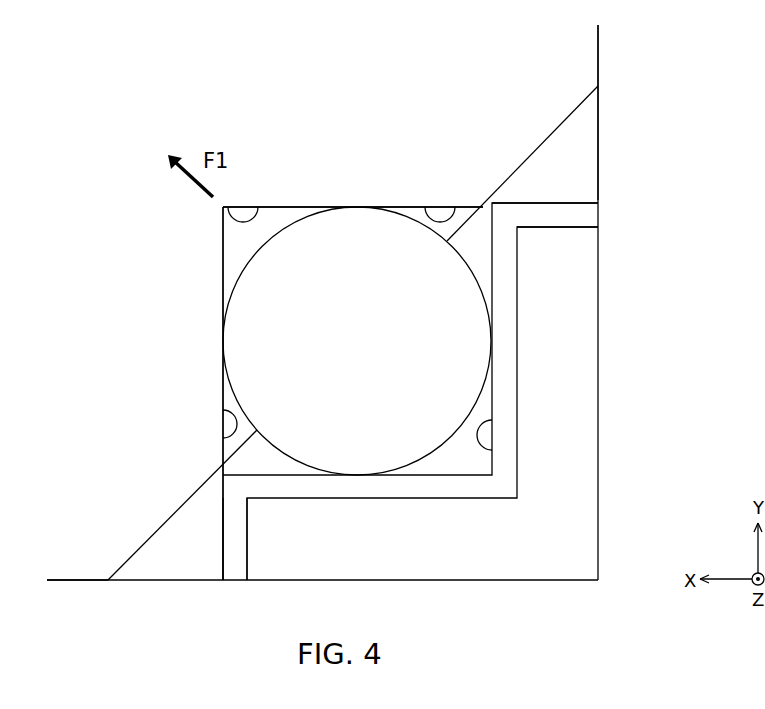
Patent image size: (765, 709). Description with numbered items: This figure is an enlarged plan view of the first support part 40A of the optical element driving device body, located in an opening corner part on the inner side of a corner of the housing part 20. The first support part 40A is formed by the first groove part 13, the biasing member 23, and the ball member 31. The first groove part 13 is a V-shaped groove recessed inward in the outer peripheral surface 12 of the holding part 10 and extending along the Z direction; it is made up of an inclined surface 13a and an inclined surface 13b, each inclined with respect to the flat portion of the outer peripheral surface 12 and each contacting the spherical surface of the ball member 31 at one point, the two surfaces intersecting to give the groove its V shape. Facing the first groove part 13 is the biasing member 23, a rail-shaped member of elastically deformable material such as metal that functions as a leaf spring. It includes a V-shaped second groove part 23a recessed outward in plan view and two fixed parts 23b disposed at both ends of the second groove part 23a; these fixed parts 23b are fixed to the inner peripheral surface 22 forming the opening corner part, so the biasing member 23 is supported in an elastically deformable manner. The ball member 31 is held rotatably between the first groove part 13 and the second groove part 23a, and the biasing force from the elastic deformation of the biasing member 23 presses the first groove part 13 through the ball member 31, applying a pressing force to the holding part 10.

The holding part 10 is at (92, 568).
The outer peripheral surface 12 is at (597, 55).
The first groove part 13 is at (256, 214).
The inclined surface 13a is at (426, 210).
The inclined surface 13b is at (225, 412).
The housing part 20 is at (92, 615).
The inner peripheral surface 22 is at (599, 70).
The biasing member 23 is at (503, 487).
The second groove part 23a is at (490, 458).
The fixed part 23b is at (563, 215).
The ball member 31 is at (383, 345).
The first support part 40A is at (203, 300).